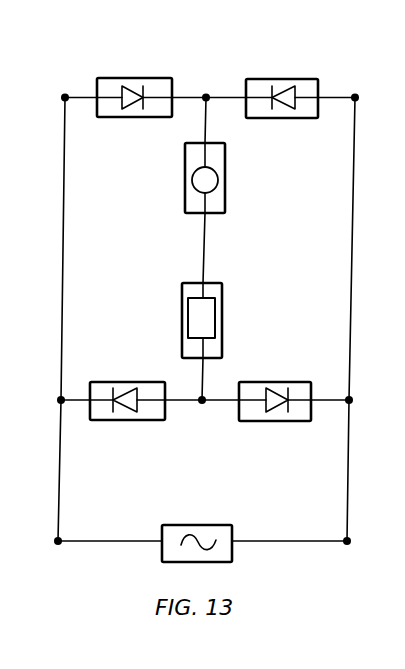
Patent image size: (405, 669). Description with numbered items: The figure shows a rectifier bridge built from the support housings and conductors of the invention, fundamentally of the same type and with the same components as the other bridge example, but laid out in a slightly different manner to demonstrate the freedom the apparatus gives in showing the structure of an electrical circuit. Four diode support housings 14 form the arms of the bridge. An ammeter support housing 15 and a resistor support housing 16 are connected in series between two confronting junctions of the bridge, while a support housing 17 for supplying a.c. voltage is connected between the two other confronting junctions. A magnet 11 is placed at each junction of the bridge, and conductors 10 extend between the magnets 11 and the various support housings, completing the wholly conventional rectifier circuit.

The conductor 10 is at (84, 95).
The magnet 11 is at (63, 97).
The diode support housing 14 is at (140, 78).
The ammeter support housing 15 is at (225, 163).
The resistor support housing 16 is at (222, 322).
The support housing for supplying a.c. voltage 17 is at (201, 525).